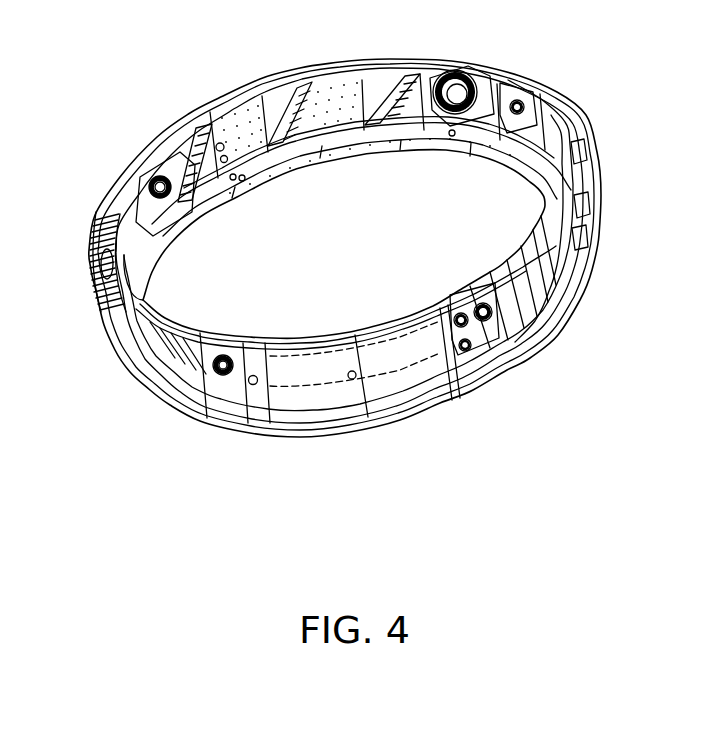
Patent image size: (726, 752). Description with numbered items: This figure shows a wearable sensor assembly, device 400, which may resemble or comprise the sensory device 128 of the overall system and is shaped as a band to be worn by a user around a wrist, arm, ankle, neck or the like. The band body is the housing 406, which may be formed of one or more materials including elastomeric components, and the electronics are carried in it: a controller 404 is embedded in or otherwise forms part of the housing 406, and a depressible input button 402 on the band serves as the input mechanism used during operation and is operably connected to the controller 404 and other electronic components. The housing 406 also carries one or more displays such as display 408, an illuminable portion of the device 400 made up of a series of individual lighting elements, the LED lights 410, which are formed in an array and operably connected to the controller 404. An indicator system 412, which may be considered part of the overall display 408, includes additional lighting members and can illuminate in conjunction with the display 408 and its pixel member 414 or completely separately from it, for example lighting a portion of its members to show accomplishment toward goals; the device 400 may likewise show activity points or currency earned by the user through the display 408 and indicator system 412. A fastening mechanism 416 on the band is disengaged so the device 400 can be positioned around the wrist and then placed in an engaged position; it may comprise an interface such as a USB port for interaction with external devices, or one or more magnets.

The sensory device 128 is at (374, 243).
The device 400 is at (613, 70).
The depressible input button 402 is at (465, 56).
The controller 404 is at (97, 230).
The housing 406 is at (594, 146).
The display 408 is at (273, 110).
The LED lights 410 is at (326, 83).
The indicator system 412 is at (376, 140).
The pixel member 414 is at (322, 147).
The fastening mechanism 416 is at (380, 434).